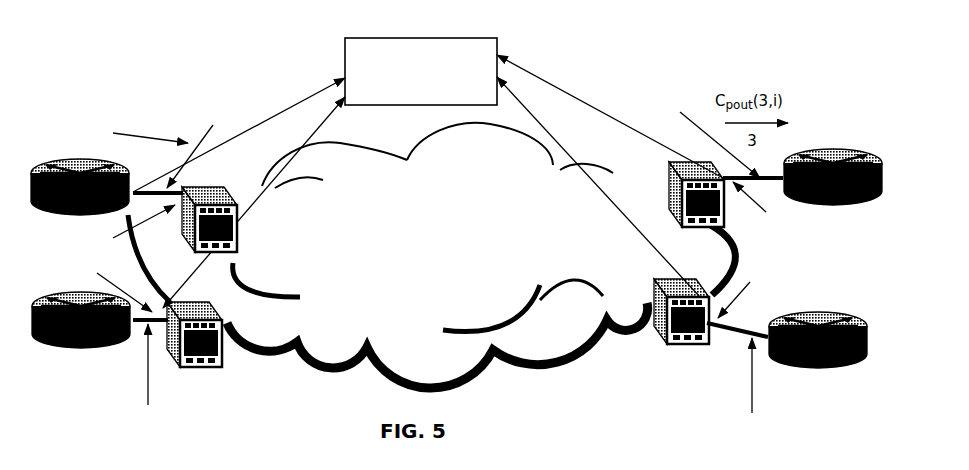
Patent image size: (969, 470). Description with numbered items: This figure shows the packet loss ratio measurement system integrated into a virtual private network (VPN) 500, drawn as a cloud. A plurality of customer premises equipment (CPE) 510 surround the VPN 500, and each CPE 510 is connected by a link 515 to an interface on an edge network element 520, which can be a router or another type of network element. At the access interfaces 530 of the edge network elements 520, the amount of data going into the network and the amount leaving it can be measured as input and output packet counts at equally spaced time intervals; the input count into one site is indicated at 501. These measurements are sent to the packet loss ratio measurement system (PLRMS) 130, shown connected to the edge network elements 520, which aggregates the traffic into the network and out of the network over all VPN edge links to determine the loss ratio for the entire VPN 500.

The packet loss ratio measurement system (PLRMS) 130 is at (428, 168).
The virtual private network (VPN) 500 is at (431, 255).
The input path Cpin(1,i) 501 is at (150, 131).
The customer premises equipment (CPE) 510 is at (456, 253).
The link 515 is at (453, 269).
The edge network element 520 is at (458, 272).
The access interface 530 is at (421, 250).